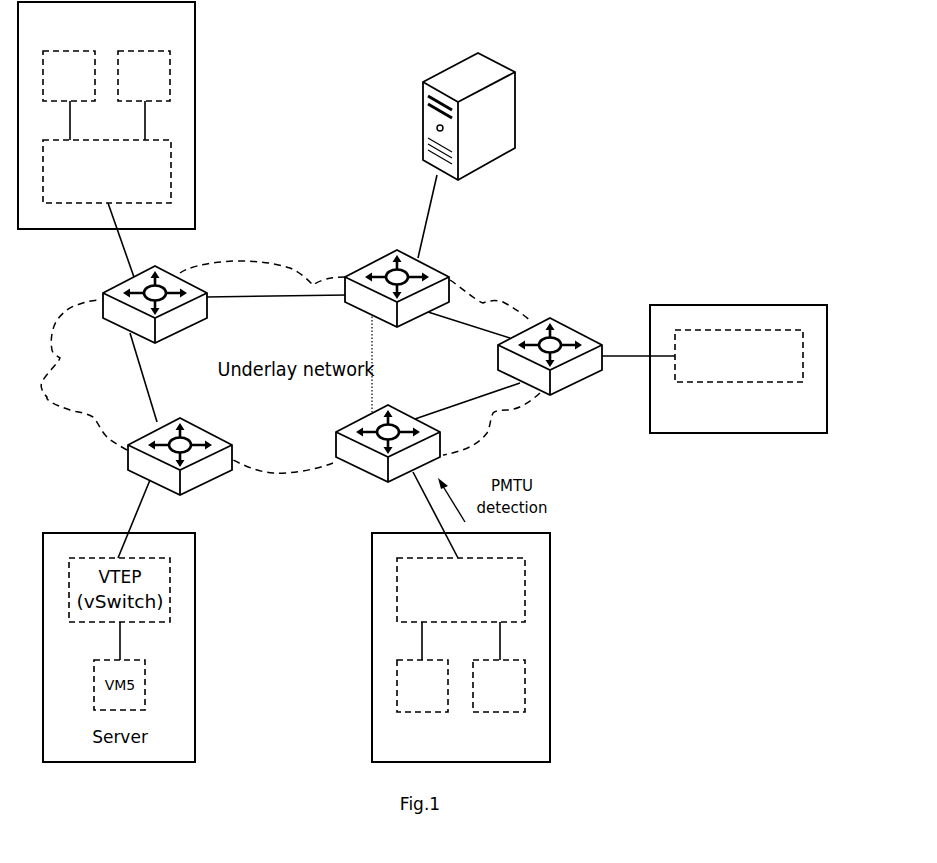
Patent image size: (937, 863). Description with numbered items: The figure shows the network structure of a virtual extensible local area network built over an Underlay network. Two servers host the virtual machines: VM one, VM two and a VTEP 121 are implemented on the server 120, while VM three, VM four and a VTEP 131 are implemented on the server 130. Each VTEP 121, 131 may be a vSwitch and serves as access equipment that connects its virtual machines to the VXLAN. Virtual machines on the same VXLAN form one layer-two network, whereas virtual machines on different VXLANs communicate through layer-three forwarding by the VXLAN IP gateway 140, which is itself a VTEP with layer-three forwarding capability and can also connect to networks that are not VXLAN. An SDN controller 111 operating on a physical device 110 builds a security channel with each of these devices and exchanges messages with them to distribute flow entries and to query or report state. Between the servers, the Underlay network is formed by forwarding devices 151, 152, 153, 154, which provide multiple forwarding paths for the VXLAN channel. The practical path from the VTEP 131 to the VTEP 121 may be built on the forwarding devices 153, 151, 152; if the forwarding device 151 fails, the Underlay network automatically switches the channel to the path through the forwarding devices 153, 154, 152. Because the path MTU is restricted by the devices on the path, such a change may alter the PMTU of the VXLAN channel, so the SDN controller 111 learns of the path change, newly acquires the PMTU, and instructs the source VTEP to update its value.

The physical device 110 is at (738, 380).
The SDN controller 111 is at (740, 328).
The server 120 is at (500, 647).
The VTEP 121 is at (525, 590).
The server 130 is at (144, 115).
The VTEP 131 is at (171, 158).
The VXLAN IP gateway 140 is at (515, 98).
The forwarding device 151 is at (130, 478).
The forwarding device 152 is at (360, 470).
The forwarding device 153 is at (105, 290).
The forwarding device 154 is at (372, 265).